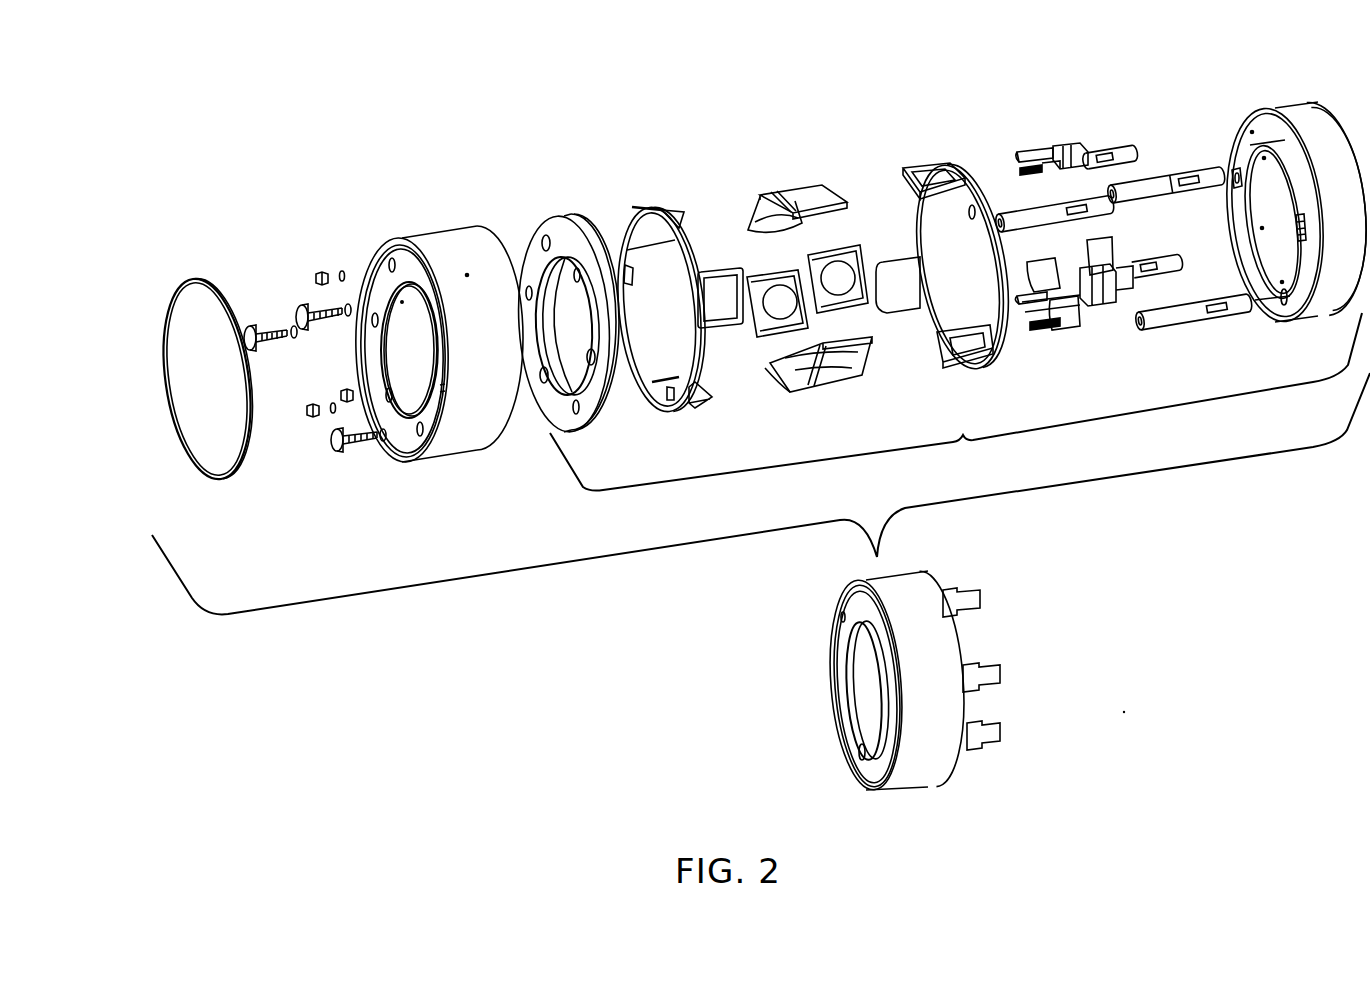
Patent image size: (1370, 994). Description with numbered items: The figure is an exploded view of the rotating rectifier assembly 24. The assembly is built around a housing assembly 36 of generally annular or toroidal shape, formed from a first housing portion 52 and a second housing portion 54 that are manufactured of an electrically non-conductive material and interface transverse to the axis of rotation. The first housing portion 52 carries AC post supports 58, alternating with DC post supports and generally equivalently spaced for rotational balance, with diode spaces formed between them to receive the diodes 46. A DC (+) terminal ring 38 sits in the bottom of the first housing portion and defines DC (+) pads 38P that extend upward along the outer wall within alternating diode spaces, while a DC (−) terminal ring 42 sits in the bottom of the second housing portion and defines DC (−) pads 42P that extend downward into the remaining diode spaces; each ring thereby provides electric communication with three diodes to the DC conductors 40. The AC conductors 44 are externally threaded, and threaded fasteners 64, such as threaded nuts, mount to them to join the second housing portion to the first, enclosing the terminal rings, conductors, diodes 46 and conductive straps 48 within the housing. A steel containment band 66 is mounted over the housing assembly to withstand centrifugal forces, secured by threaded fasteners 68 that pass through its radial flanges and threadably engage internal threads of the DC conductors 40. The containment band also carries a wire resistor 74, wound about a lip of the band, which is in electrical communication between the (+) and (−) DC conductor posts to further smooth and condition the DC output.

The rectifier assembly 24 is at (920, 777).
The housing assembly 36 is at (956, 402).
The DC (+) terminal ring 38 is at (917, 220).
The DC (+) pads 38P is at (930, 173).
The DC conductors 40 is at (1207, 173).
The DC (−) terminal ring 42 is at (643, 210).
The DC (−) pads 42P is at (723, 287).
The AC conductors 44 is at (1123, 147).
The diodes 46 is at (847, 360).
The conductive straps 48 is at (1060, 327).
The first housing portion 52 is at (1293, 107).
The second housing portion 54 is at (537, 227).
The AC post supports 58 is at (1062, 140).
The threaded fasteners 64 is at (325, 277).
The containment band 66 is at (435, 230).
The threaded fasteners 68 is at (263, 327).
The wire resistor 74 is at (180, 290).